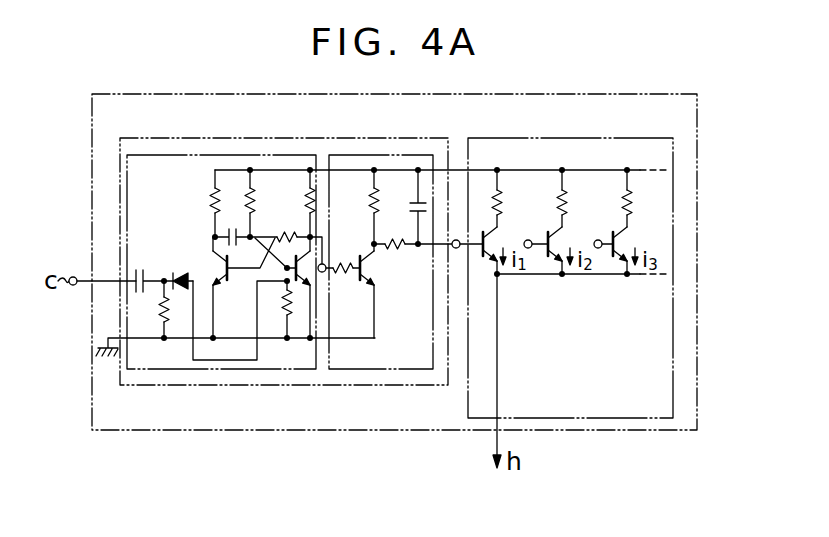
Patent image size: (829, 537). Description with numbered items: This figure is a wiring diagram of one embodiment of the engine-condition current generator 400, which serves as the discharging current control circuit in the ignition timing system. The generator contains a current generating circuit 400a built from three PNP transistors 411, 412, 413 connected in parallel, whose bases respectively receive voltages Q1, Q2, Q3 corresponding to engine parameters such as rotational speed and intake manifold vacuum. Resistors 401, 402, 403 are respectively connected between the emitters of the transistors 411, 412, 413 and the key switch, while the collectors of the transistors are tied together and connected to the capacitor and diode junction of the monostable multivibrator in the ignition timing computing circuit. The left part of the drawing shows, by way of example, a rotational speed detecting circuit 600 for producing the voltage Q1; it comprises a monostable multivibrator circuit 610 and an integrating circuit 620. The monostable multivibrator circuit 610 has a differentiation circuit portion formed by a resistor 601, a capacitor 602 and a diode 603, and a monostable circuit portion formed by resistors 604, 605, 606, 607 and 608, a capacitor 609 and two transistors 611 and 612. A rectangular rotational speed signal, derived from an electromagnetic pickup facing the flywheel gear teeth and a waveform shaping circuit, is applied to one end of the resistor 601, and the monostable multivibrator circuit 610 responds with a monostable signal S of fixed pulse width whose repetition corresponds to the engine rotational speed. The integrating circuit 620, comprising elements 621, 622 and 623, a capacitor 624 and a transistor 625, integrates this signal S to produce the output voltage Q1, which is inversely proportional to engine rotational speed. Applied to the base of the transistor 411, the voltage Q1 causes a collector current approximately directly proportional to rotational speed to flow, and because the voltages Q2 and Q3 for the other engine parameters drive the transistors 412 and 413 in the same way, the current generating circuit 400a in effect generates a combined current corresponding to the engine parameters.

The engine-condition current generator 400 is at (633, 94).
The current generating circuit 400a is at (579, 138).
The resistor 401 is at (498, 190).
The resistor 402 is at (563, 190).
The resistor 403 is at (630, 203).
The PNP transistor 411 is at (489, 257).
The PNP transistor 412 is at (554, 257).
The PNP transistor 413 is at (618, 257).
The rotational speed detecting circuit 600 is at (425, 136).
The resistor 601 is at (160, 301).
The capacitor 602 is at (138, 272).
The diode 603 is at (192, 262).
The resistor 604 is at (212, 197).
The resistor 605 is at (243, 190).
The resistor 606 is at (307, 205).
The resistor 607 is at (284, 234).
The resistor 608 is at (283, 303).
The capacitor 609 is at (228, 233).
The monostable multivibrator circuit 610 is at (200, 372).
The transistor 611 is at (222, 270).
The transistor 612 is at (318, 282).
The integrating circuit 620 is at (340, 372).
The resistor 621 is at (348, 264).
The resistor 622 is at (370, 192).
The resistor 623 is at (395, 247).
The capacitor 624 is at (425, 200).
The transistor 625 is at (372, 282).
The output voltage Q1 is at (457, 240).
The voltage Q2 is at (530, 241).
The voltage Q3 is at (598, 241).
The monostable signal S is at (306, 279).